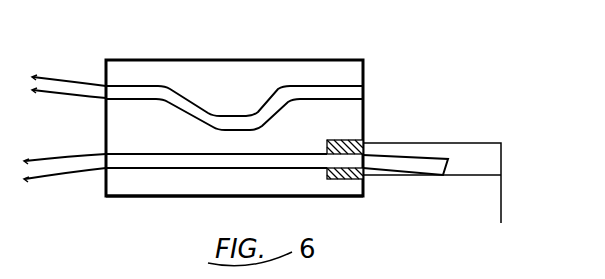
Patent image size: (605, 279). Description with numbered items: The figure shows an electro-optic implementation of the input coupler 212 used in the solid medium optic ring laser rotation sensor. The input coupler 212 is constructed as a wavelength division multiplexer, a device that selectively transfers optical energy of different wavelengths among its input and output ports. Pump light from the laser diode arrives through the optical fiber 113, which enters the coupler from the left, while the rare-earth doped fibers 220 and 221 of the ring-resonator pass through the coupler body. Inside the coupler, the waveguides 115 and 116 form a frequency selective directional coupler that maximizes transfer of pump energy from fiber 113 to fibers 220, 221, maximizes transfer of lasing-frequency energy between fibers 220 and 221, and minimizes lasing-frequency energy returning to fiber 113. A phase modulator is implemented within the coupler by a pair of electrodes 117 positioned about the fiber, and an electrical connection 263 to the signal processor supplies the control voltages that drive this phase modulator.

The optical fiber 113 is at (66, 78).
The waveguide 115 is at (207, 113).
The waveguide 116 is at (222, 172).
The pair of electrodes 117 is at (327, 142).
The input coupler 212 is at (366, 57).
The rare-earth doped fiber 220 is at (58, 181).
The rare-earth doped fiber 221 is at (425, 175).
The electrical connection 263 is at (501, 192).